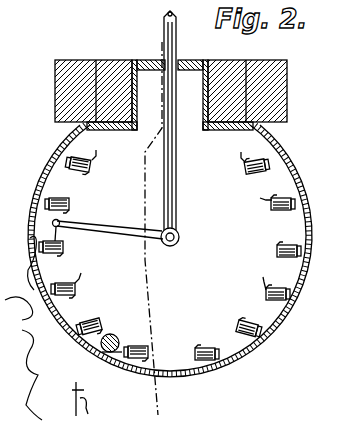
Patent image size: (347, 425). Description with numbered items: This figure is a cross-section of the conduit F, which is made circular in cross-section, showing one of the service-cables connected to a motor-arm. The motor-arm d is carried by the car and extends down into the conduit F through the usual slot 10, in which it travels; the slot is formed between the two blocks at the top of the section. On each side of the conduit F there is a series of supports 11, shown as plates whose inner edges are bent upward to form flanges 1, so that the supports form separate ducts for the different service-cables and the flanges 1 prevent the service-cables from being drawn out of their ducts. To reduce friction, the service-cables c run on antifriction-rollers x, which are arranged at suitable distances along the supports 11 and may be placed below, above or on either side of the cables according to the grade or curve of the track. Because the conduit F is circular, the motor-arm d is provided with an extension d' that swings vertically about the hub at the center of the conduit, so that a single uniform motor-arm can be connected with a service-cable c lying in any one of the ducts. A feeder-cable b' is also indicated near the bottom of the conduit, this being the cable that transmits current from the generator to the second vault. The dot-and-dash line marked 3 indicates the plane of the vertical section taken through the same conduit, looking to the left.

The flanges 1 is at (173, 213).
The section line 3 is at (157, 225).
The slot 10 is at (181, 61).
The supports 11 is at (92, 164).
The feeder-cable b' is at (114, 332).
The service-cable c is at (168, 259).
The motor-arm d is at (178, 128).
The extension d' is at (108, 225).
The antifriction-rollers x is at (170, 261).
The conduit F is at (286, 160).